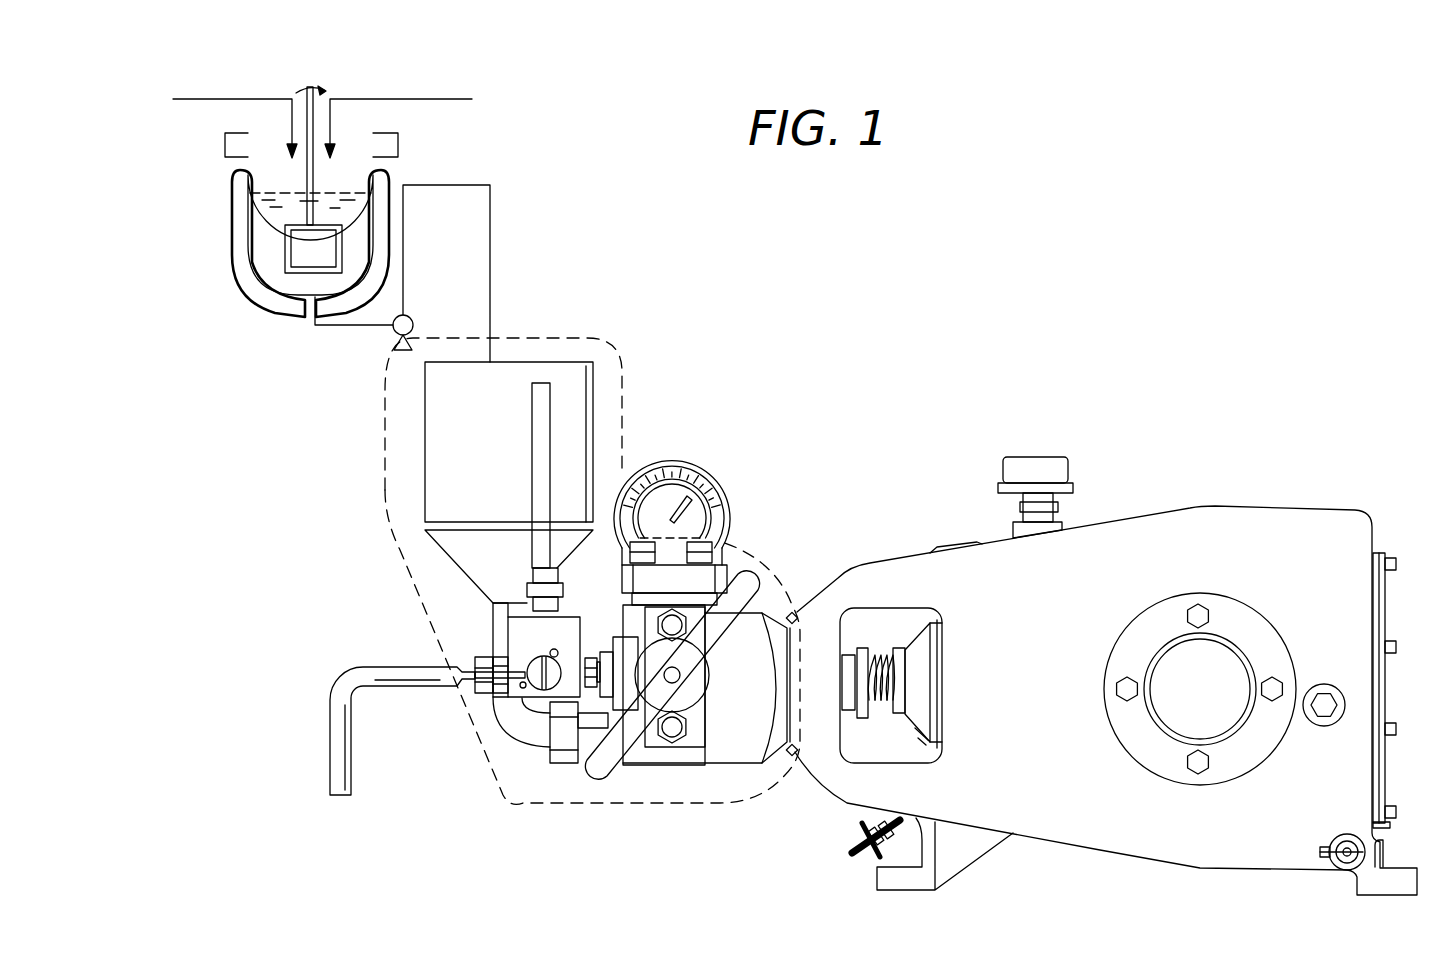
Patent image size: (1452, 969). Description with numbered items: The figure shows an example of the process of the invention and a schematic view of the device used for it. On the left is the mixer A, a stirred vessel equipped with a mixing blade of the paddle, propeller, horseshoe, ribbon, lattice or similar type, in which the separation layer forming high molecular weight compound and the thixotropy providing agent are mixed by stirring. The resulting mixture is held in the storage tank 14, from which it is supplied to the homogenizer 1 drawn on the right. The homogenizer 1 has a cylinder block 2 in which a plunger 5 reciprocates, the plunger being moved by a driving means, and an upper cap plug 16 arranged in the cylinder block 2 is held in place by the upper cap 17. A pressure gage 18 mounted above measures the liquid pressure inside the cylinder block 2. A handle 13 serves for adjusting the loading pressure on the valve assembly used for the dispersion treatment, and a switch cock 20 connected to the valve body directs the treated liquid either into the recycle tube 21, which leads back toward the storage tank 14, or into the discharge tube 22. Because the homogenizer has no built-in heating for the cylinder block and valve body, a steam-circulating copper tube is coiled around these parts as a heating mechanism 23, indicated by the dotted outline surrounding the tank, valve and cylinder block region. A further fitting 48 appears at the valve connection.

The homogenizer 1 is at (1246, 470).
The cylinder block 2 is at (728, 757).
The plunger 5 is at (882, 717).
The handle 13 is at (594, 772).
The storage tank 14 is at (450, 541).
The upper cap plug 16 is at (690, 592).
The upper cap 17 is at (718, 570).
The pressure gage 18 is at (722, 480).
The switch cock 20 is at (483, 698).
The recycle tube 21 is at (552, 425).
The discharge tube 22 is at (410, 678).
The heating mechanism 23 is at (424, 615).
The connector fitting 48 is at (533, 735).
The mixer A is at (258, 316).